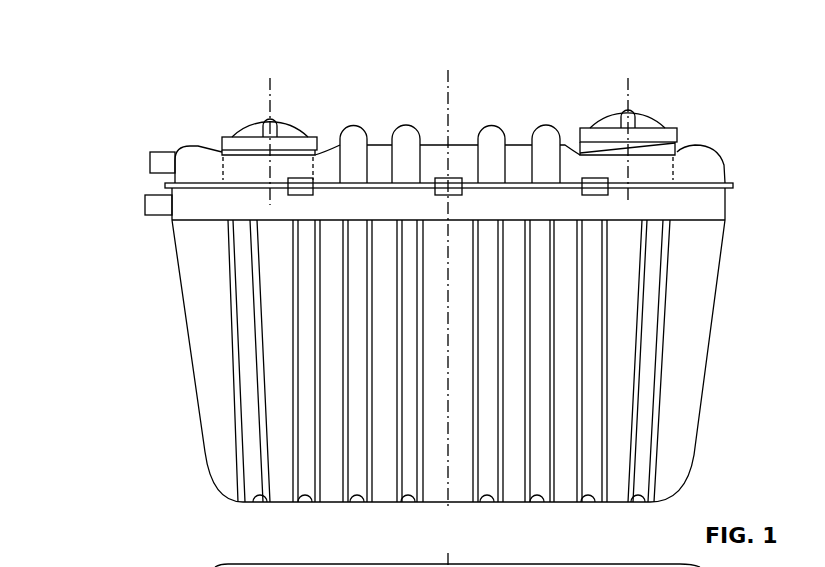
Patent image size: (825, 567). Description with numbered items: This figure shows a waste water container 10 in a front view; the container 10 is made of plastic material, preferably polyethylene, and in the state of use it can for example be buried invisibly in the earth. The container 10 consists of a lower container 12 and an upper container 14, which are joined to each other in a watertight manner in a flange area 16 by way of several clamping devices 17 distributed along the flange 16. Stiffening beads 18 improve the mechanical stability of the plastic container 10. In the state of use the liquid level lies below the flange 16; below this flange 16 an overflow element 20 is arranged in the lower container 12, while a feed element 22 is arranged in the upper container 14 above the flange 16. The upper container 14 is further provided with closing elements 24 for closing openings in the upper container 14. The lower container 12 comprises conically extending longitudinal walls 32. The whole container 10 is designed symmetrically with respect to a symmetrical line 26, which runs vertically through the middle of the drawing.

The container 10 is at (96, 129).
The lower container 12 is at (218, 395).
The upper container 14 is at (208, 167).
The flange area 16 is at (736, 204).
The clamping devices 17 is at (305, 184).
The stiffening beads 18 is at (360, 127).
The overflow element 20 is at (163, 217).
The feed element 22 is at (162, 158).
The closing elements 24 is at (257, 123).
The symmetrical line 26 is at (450, 102).
The longitudinal walls 32 is at (600, 563).